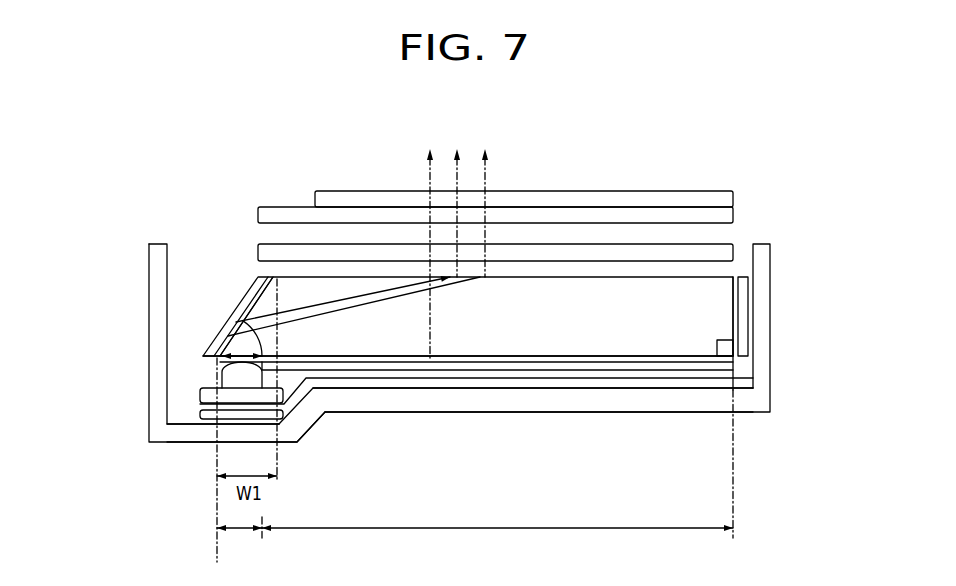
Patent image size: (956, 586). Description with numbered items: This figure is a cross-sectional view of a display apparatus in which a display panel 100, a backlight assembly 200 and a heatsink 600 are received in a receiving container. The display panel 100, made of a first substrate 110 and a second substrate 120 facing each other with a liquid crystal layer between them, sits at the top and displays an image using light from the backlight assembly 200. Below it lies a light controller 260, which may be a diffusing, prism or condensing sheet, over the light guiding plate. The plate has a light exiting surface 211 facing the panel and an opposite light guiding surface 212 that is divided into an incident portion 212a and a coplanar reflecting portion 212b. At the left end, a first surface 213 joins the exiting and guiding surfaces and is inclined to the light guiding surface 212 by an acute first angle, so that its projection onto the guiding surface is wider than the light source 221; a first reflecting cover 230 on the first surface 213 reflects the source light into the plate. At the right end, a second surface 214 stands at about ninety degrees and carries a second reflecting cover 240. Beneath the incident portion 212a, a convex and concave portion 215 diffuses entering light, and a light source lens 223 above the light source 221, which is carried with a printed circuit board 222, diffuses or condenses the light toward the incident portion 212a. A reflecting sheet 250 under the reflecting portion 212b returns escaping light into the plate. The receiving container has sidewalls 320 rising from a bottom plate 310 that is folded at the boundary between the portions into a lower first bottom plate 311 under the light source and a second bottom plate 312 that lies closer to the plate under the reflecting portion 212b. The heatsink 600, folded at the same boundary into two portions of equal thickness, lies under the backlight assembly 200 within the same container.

The display panel 100 is at (88, 157).
The first substrate 110 is at (258, 215).
The second substrate 120 is at (315, 199).
The backlight assembly 200 is at (88, 353).
The light exiting surface 211 is at (565, 275).
The light guiding surface 212 is at (513, 358).
The incident portion 212a is at (240, 461).
The reflecting portion 212b is at (497, 477).
The first surface 213 is at (236, 308).
The second surface 214 is at (733, 297).
The convex and concave portion 215 is at (212, 355).
The light source 221 is at (200, 398).
The printed circuit board 222 is at (200, 412).
The light source lens 223 is at (224, 372).
The first reflecting cover 230 is at (240, 326).
The second reflecting cover 240 is at (748, 300).
The reflecting sheet 250 is at (733, 364).
The light controller 260 is at (733, 253).
The bottom plate 310 is at (411, 467).
The first bottom plate 311 is at (286, 442).
The second bottom plate 312 is at (386, 410).
The sidewalls 320 is at (766, 326).
The heatsink 600 is at (733, 382).